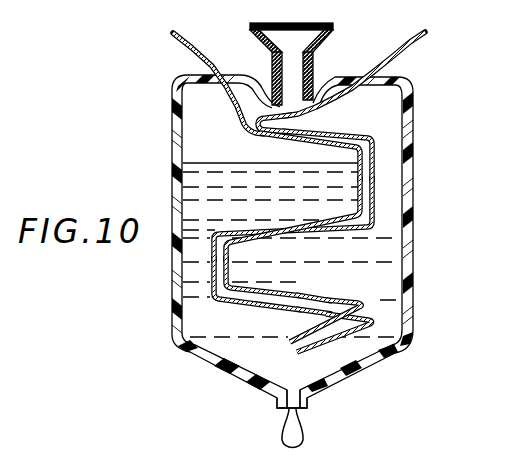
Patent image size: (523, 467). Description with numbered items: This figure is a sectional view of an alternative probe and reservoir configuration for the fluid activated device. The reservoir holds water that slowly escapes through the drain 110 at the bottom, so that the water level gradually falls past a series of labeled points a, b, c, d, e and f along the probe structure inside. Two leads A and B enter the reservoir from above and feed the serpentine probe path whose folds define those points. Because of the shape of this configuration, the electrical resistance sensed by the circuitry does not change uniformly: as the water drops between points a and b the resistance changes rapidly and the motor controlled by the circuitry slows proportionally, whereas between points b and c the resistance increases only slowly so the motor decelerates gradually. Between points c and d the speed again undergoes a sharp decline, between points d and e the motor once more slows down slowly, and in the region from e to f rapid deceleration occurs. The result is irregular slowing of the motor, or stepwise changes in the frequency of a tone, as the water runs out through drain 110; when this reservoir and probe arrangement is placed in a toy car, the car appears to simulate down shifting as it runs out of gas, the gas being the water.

The inlet tube A is at (171, 36).
The inlet tube B is at (426, 31).
The point a is at (252, 118).
The point b is at (378, 135).
The point c is at (363, 219).
The point d is at (300, 247).
The point e is at (300, 282).
The point f is at (368, 320).
The drain 110 is at (303, 407).